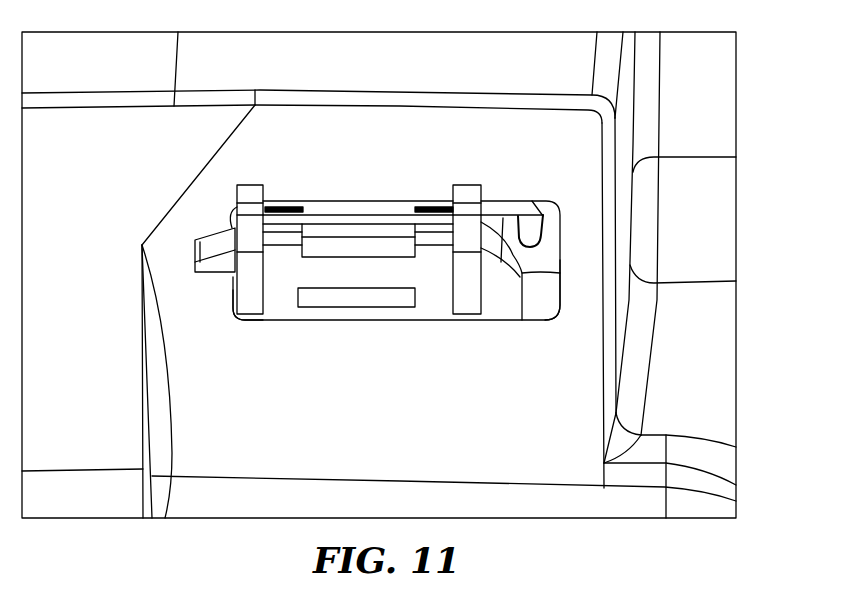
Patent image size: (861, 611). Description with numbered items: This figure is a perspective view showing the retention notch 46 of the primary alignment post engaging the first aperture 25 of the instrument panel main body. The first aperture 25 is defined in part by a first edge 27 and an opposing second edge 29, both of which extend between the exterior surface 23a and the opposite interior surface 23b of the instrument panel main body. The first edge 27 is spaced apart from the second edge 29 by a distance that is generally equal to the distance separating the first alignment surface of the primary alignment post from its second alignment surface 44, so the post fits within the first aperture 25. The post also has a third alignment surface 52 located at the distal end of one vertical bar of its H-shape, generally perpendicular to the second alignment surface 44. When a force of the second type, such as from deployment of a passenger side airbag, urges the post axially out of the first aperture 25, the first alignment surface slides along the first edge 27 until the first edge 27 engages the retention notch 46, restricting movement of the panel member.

The exterior surface 23a is at (543, 215).
The interior surface 23b is at (307, 446).
The first aperture 25 is at (530, 302).
The first edge 27 is at (230, 300).
The second edge 29 is at (562, 287).
The second alignment surface 44 is at (481, 298).
The retention notch 46 is at (237, 283).
The third alignment surface 52 is at (249, 300).